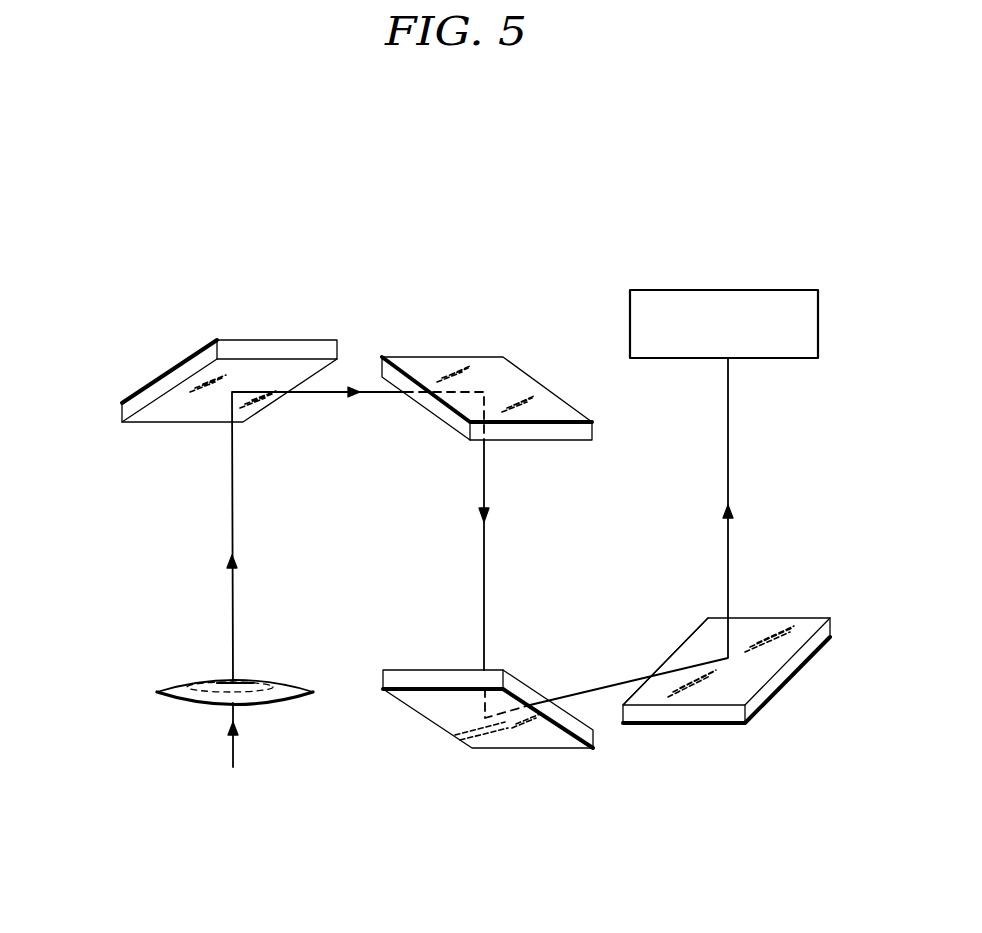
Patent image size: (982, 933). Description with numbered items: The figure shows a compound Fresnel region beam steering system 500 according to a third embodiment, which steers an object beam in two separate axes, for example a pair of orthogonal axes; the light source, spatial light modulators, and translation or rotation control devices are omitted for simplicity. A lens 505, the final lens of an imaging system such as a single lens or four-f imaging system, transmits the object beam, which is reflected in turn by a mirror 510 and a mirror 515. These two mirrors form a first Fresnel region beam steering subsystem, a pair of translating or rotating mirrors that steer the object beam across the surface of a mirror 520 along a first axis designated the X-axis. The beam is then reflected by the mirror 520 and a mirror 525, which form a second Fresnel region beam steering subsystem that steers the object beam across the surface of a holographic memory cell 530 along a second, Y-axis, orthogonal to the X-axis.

The compound Fresnel region beam steering system 500 is at (445, 228).
The lens 505 is at (157, 692).
The mirror 510 is at (180, 362).
The mirror 515 is at (457, 357).
The mirror 520 is at (527, 749).
The mirror 525 is at (780, 618).
The holographic memory cell 530 is at (753, 290).